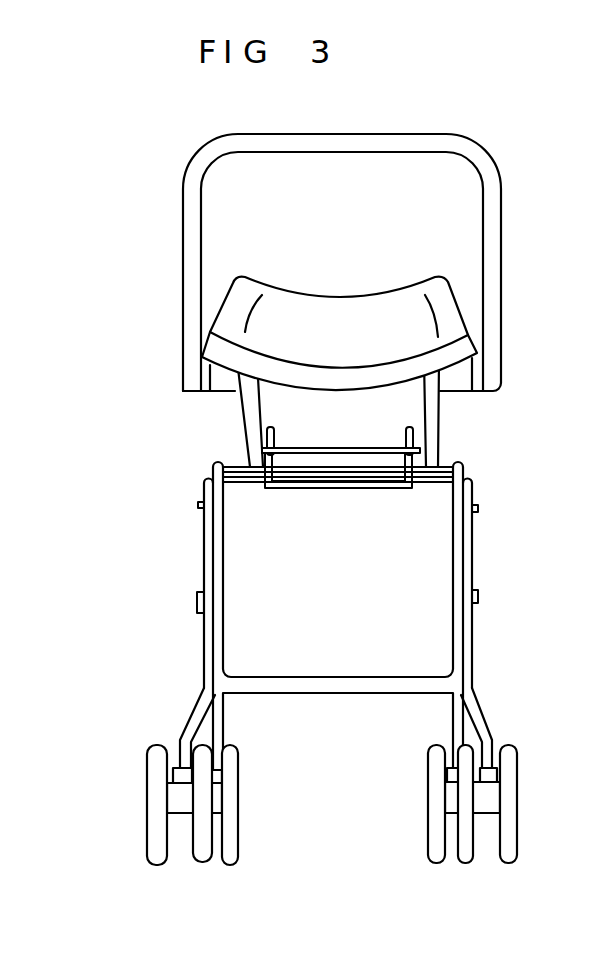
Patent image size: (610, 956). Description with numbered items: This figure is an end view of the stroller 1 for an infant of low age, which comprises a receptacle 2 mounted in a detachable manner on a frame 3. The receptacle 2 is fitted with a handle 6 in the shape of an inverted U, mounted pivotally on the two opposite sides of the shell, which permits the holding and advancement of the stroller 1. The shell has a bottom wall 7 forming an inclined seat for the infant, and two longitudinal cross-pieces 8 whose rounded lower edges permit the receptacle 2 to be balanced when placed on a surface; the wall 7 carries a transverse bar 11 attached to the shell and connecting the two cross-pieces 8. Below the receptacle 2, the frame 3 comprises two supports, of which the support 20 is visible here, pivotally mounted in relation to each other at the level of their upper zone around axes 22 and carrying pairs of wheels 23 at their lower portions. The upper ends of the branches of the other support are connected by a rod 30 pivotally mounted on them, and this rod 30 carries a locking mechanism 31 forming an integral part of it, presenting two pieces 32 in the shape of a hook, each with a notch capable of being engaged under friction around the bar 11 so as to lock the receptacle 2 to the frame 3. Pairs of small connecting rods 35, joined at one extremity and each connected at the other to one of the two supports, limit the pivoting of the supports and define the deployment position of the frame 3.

The stroller 1 is at (150, 505).
The receptacle 2 is at (183, 413).
The frame 3 is at (180, 633).
The handle 6 is at (505, 225).
The bottom wall 7 is at (327, 313).
The longitudinal cross-piece 8 is at (425, 452).
The transverse bar 11 is at (375, 450).
The support 20 is at (473, 687).
The axis 22 is at (480, 509).
The pair of wheels 23 is at (138, 813).
The rod 30 is at (290, 470).
The locking mechanism 31 is at (322, 483).
The hook-shaped piece 32 is at (420, 432).
The small connecting rod 35 is at (480, 597).